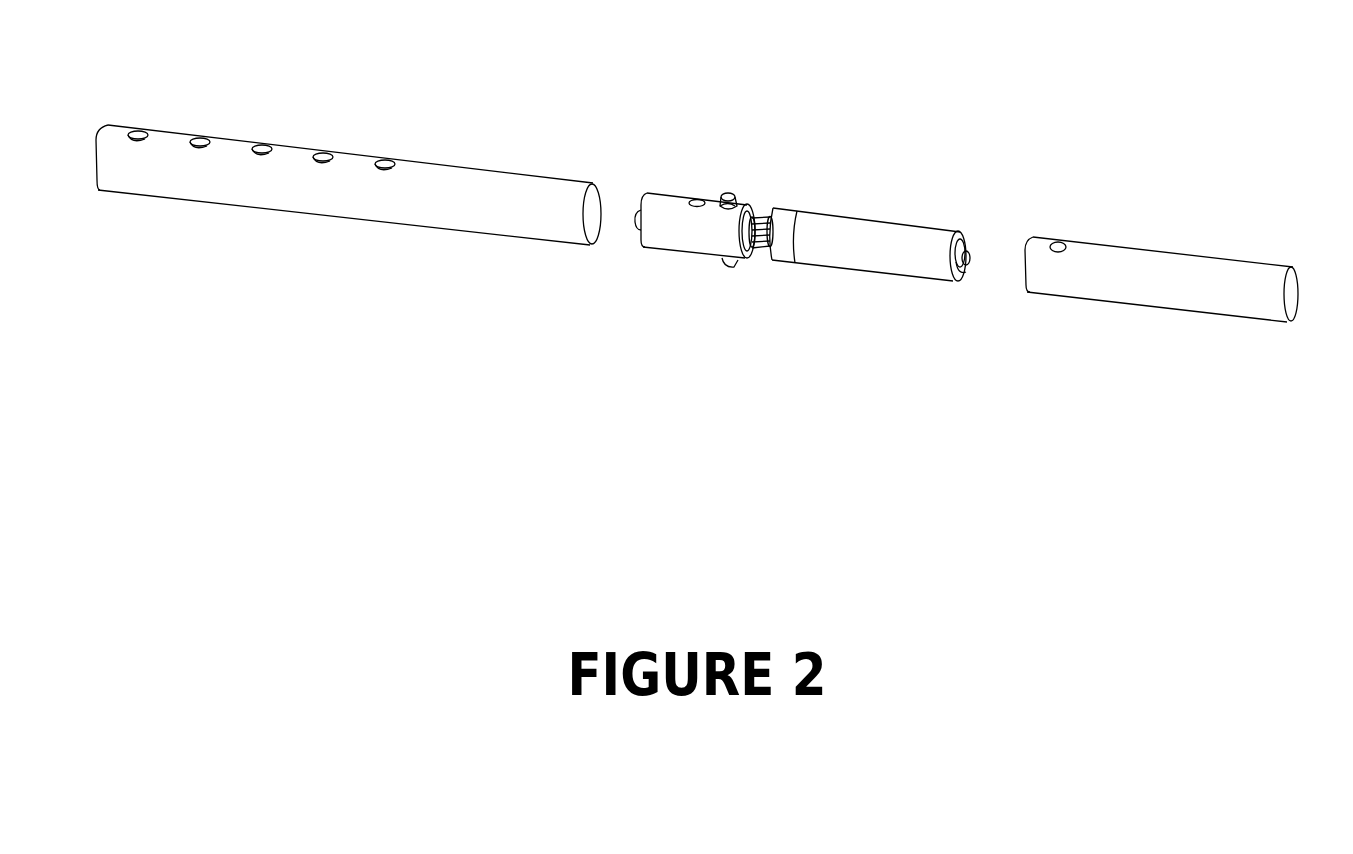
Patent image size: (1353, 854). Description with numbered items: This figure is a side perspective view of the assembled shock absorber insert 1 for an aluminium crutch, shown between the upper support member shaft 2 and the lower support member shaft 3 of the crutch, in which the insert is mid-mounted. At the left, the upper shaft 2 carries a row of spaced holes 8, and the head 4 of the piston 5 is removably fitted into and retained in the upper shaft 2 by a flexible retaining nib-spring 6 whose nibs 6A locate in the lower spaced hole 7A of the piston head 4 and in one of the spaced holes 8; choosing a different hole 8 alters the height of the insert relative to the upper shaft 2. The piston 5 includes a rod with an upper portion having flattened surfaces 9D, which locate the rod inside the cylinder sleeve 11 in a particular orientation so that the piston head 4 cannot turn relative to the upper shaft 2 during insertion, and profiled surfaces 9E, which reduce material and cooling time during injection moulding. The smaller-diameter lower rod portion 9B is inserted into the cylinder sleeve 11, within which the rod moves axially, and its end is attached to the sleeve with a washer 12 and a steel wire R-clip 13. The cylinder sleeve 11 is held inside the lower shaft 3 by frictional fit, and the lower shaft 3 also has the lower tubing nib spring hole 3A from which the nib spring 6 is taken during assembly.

The shock absorber insert 1 is at (1055, 51).
The upper support member shaft 2 is at (483, 173).
The lower support member shaft 3 is at (1120, 243).
The lower tubing nib spring hole 3A is at (1066, 247).
The piston head 4 is at (664, 214).
The piston 5 is at (735, 266).
The nib-spring 6 is at (638, 222).
The nibs 6A is at (733, 196).
The lower spaced hole 7A is at (700, 200).
The spaced holes 8 is at (266, 143).
The lower rod portion 9B is at (970, 254).
The flattened surfaces 9D is at (762, 226).
The profiled surfaces 9E is at (760, 244).
The cylinder sleeve 11 is at (864, 231).
The washer 12 is at (965, 245).
The R-clip 13 is at (963, 272).